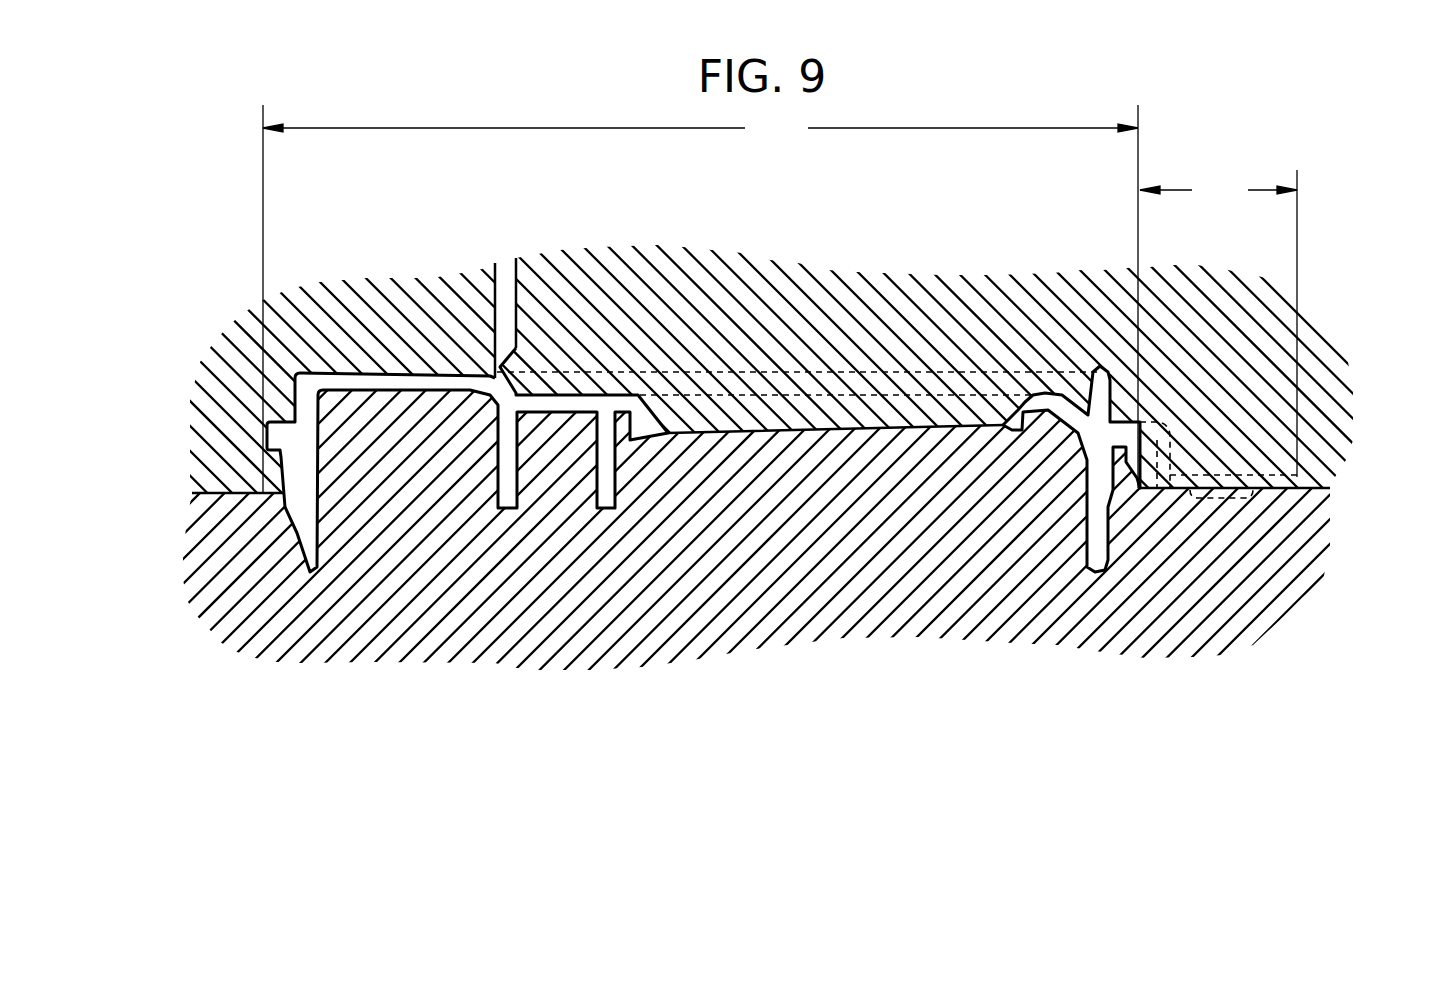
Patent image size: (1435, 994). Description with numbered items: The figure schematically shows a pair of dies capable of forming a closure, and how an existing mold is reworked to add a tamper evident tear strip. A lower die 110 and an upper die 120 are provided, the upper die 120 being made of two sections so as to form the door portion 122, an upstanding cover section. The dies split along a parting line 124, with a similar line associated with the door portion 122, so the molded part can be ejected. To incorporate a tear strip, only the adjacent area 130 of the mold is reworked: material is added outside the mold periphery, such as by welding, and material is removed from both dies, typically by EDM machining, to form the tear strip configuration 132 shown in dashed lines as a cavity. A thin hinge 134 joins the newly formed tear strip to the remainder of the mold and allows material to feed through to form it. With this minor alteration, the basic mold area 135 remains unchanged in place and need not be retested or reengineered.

The lower die 110 is at (918, 570).
The upper die 120 is at (862, 288).
The door portion 122 is at (497, 262).
The parting line 124 is at (228, 493).
The adjacent area of the mold 130 is at (1218, 323).
The tear strip configuration 132 is at (1297, 475).
The thin hinge 134 is at (1140, 422).
The basic mold area 135 is at (700, 299).